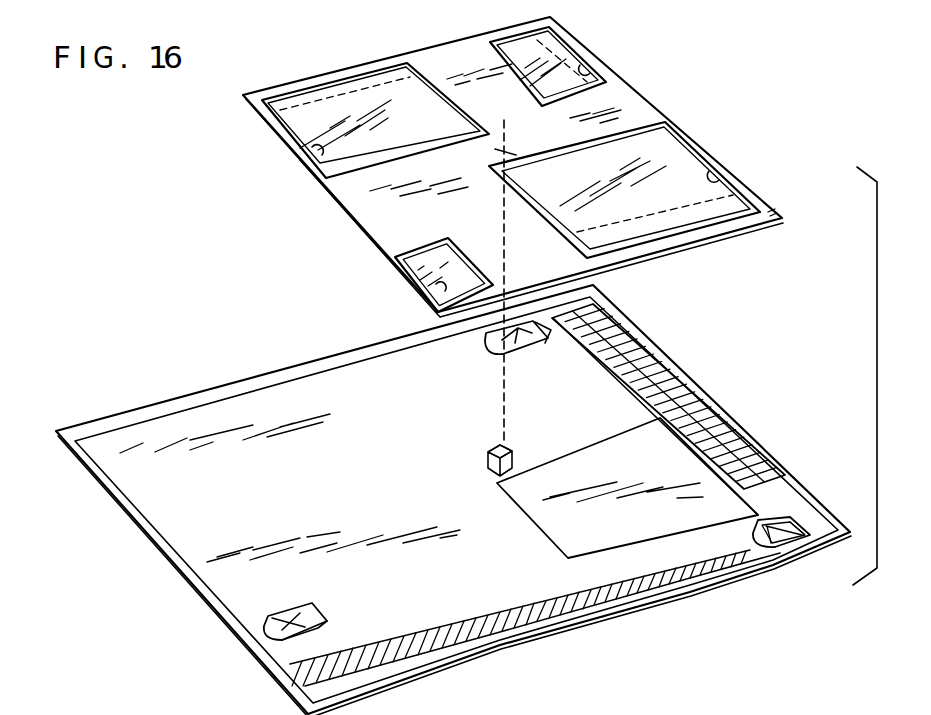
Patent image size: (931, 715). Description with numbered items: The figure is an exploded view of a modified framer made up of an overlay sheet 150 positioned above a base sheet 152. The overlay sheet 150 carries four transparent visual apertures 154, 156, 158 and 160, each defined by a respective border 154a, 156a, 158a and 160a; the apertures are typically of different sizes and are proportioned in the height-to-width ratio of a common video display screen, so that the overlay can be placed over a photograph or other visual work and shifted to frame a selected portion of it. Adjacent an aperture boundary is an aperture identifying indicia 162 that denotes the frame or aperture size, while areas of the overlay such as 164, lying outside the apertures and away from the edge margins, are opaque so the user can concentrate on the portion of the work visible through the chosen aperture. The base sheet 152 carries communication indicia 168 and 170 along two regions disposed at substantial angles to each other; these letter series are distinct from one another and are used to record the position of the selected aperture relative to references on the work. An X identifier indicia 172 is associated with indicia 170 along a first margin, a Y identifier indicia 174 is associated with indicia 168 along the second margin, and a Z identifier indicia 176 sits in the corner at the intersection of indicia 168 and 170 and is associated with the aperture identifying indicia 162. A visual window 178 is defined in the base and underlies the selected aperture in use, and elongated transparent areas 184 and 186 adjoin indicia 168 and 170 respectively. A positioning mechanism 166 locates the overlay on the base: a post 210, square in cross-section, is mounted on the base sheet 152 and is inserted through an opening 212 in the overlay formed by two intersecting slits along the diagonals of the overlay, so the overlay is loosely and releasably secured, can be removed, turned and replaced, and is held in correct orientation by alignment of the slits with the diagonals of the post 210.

The overlay sheet 150 is at (642, 102).
The base sheet 152 is at (243, 410).
The visual aperture 154 is at (678, 153).
The border 154a is at (713, 177).
The visual aperture 156 is at (553, 50).
The border 156a is at (585, 69).
The visual aperture 158 is at (305, 130).
The border 158a is at (317, 152).
The visual aperture 160 is at (431, 264).
The border 160a is at (440, 289).
The aperture identifying indicia 162 is at (782, 222).
The opaque area of overlay 164 is at (377, 203).
The positioning mechanism 166 is at (440, 466).
The communication indicia 168 is at (733, 407).
The communication indicia 170 is at (615, 622).
The X identifier indicia 172 is at (310, 607).
The Y identifier indicia 174 is at (537, 342).
The Z identifier indicia 176 is at (772, 548).
The visual window 178 is at (693, 522).
The elongated transparent area 184 is at (620, 383).
The elongated transparent area 186 is at (414, 622).
The post 210 is at (514, 458).
The opening 212 is at (506, 150).